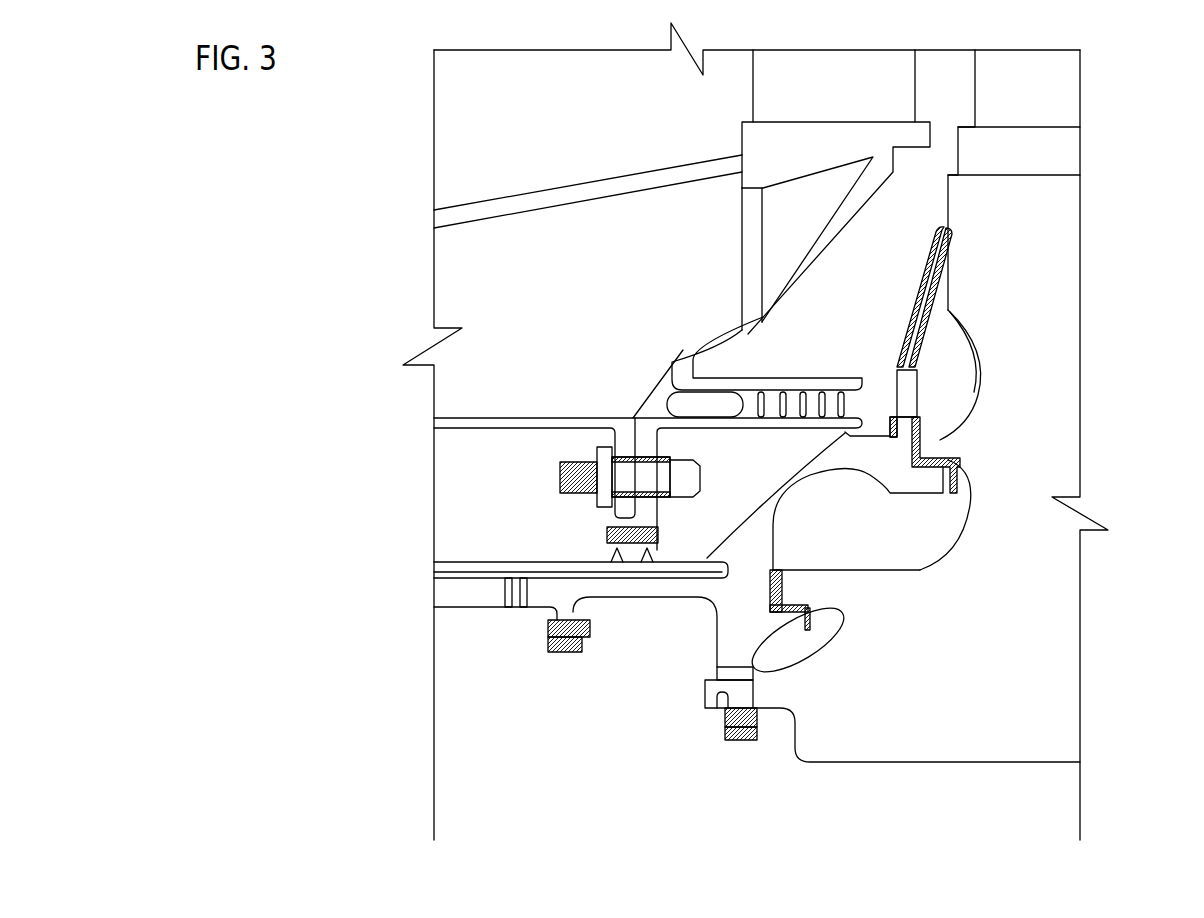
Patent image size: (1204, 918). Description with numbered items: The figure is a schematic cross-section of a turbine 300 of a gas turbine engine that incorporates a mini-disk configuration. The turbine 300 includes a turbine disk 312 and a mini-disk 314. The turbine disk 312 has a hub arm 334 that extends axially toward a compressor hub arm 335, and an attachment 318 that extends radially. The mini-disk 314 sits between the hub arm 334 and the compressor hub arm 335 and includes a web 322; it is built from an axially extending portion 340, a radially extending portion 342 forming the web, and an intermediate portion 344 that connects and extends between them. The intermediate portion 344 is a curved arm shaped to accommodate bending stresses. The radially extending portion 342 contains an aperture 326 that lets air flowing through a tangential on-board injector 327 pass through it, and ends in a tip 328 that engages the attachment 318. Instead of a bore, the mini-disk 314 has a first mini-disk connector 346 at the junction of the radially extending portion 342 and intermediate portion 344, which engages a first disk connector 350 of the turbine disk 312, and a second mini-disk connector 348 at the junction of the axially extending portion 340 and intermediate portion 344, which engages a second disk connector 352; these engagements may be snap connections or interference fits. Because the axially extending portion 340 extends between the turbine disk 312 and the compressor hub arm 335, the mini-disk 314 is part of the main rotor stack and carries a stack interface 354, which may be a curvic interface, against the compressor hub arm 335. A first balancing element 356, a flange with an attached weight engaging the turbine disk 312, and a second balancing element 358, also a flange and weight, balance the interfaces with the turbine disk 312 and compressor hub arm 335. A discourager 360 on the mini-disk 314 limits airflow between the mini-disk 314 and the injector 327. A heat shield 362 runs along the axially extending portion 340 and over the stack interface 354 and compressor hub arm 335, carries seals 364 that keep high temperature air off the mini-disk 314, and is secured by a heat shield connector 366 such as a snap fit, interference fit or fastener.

The turbine 300 is at (318, 207).
The turbine disk 312 is at (1053, 723).
The mini-disk 314 is at (941, 512).
The attachment 318 is at (1040, 258).
The web 322 is at (921, 288).
The aperture 326 is at (942, 395).
The tangential on-board injector 327 is at (688, 403).
The tip 328 is at (940, 249).
The hub arm 334 is at (877, 588).
The compressor hub arm 335 is at (457, 597).
The axially extending portion 340 is at (663, 590).
The radially extending portion 342 is at (908, 315).
The intermediate portion 344 is at (800, 480).
The first mini-disk connector 346 is at (928, 470).
The second mini-disk connector 348 is at (788, 627).
The first disk connector 350 is at (932, 442).
The second disk connector 352 is at (795, 598).
The stack interface 354 is at (512, 621).
The first balancing element 356 is at (742, 740).
The second balancing element 358 is at (565, 653).
The discourager 360 is at (830, 436).
The heat shield 362 is at (502, 564).
The seals 364 is at (596, 552).
The heat shield connector 366 is at (700, 556).